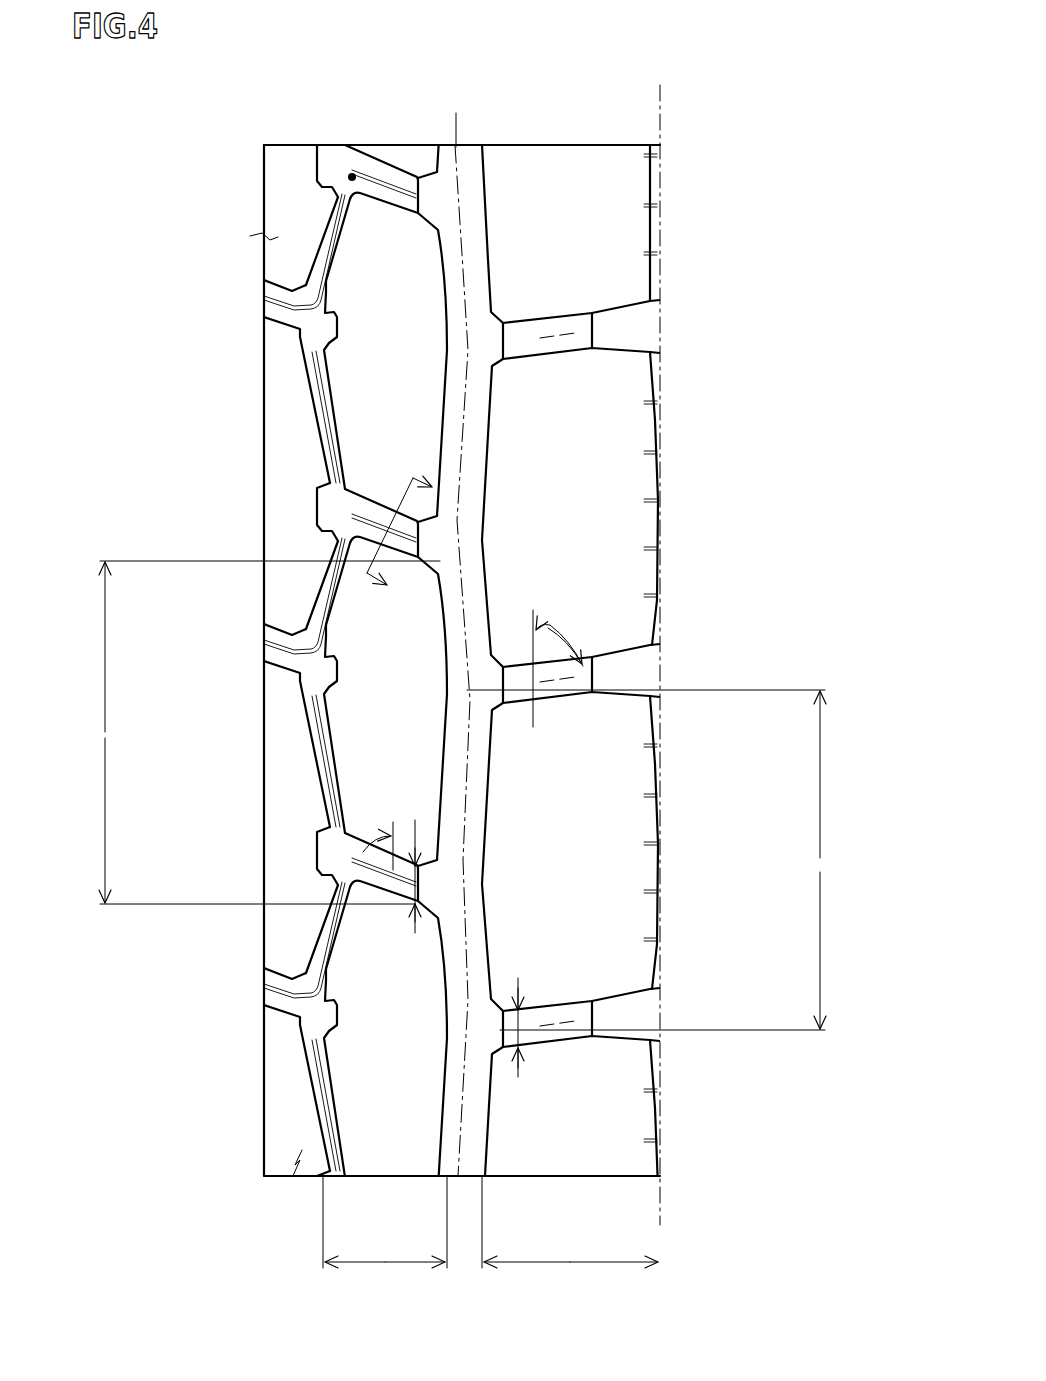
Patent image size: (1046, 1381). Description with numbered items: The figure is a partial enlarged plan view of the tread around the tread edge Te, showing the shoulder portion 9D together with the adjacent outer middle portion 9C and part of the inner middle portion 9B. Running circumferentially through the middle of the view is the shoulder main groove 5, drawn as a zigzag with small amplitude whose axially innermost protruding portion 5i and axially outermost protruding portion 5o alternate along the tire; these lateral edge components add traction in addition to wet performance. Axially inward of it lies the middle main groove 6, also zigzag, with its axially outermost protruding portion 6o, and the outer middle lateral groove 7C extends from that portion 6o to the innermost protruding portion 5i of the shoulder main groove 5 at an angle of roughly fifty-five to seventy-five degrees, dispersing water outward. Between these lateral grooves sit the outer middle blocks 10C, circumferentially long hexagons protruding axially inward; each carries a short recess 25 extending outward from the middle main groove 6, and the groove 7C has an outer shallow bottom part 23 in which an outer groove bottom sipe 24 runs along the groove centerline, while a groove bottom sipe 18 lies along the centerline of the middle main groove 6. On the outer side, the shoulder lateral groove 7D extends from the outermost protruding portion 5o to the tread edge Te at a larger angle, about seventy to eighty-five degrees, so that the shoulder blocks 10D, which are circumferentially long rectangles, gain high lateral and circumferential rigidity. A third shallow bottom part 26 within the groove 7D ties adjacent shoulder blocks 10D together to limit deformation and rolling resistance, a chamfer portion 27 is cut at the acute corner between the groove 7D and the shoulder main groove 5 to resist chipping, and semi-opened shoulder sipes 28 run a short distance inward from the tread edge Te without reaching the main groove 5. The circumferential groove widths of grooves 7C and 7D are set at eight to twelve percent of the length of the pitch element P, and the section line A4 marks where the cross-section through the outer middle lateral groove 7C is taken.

The shoulder main groove 5 is at (470, 158).
The axially innermost protruding portion 5i is at (441, 160).
The axially outermost protruding portion 5o is at (541, 160).
The middle main groove 6 is at (332, 158).
The axially outermost protruding portion 6o is at (350, 177).
The outer middle lateral groove 7C is at (397, 158).
The shoulder lateral groove 7D is at (563, 330).
The inner middle portion 9B is at (283, 1155).
The outer middle portion 9C is at (392, 1152).
The shoulder portion 9D is at (580, 1155).
The outer middle block 10C is at (367, 389).
The shoulder block 10D is at (597, 494).
The groove bottom sipe 18 is at (330, 427).
The outer shallow bottom part 23 is at (383, 193).
The outer groove bottom sipe 24 is at (428, 198).
The recess 25 is at (334, 350).
The third shallow bottom part 26 is at (553, 345).
The chamfer portion 27 is at (490, 650).
The shoulder sipe 28 is at (650, 600).
The section line A4 is at (390, 531).
The pitch element P is at (462, 795).
The tread edge Te is at (660, 128).